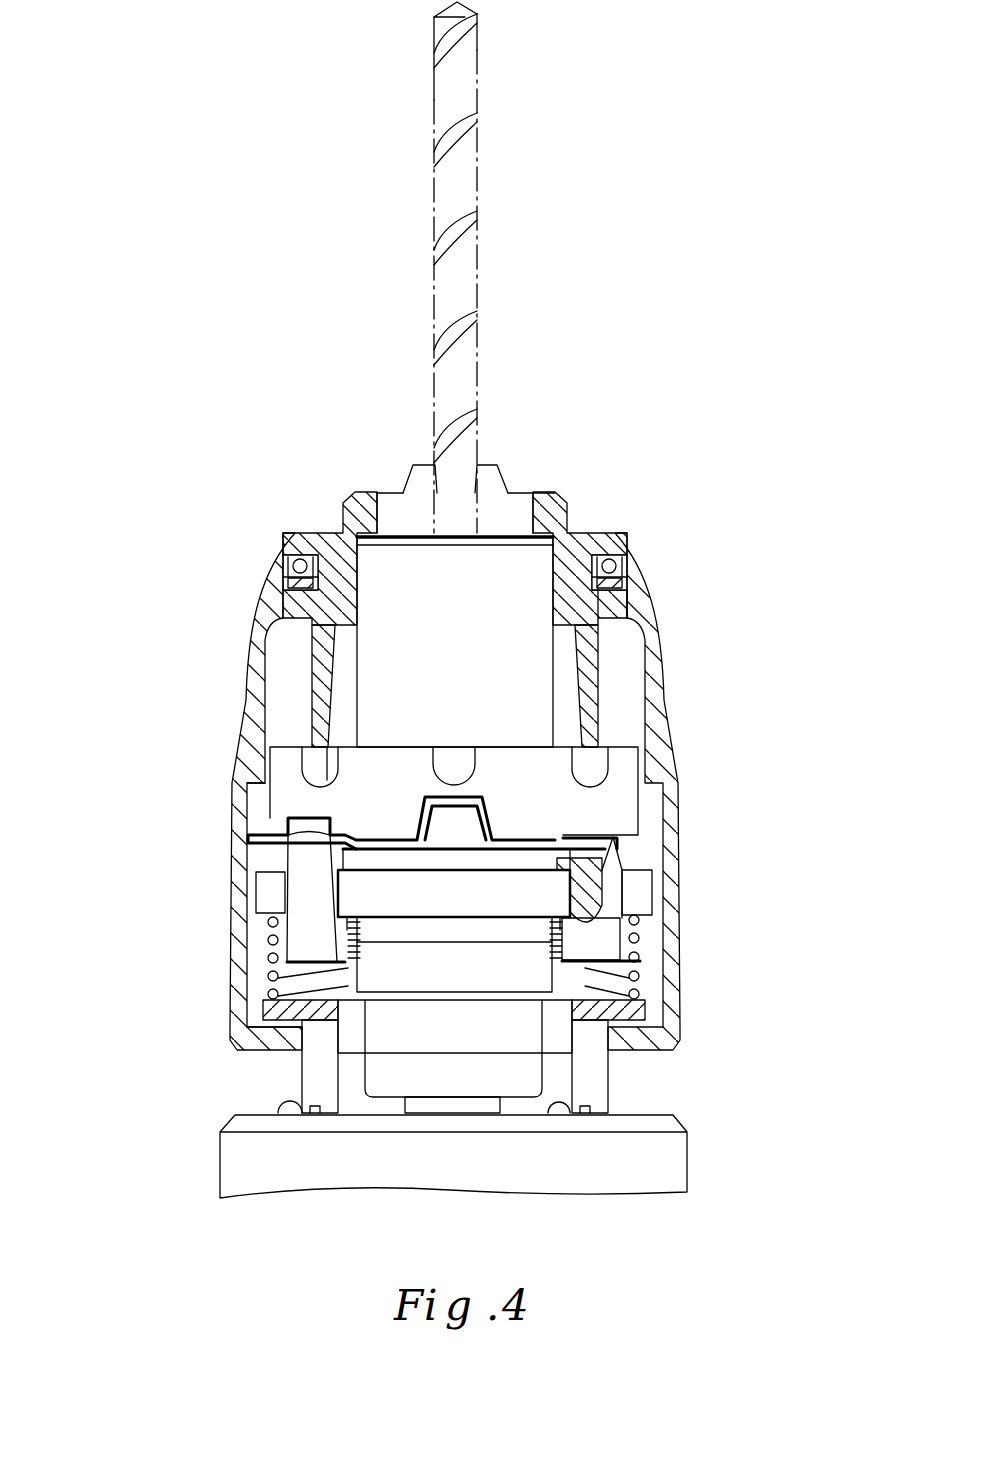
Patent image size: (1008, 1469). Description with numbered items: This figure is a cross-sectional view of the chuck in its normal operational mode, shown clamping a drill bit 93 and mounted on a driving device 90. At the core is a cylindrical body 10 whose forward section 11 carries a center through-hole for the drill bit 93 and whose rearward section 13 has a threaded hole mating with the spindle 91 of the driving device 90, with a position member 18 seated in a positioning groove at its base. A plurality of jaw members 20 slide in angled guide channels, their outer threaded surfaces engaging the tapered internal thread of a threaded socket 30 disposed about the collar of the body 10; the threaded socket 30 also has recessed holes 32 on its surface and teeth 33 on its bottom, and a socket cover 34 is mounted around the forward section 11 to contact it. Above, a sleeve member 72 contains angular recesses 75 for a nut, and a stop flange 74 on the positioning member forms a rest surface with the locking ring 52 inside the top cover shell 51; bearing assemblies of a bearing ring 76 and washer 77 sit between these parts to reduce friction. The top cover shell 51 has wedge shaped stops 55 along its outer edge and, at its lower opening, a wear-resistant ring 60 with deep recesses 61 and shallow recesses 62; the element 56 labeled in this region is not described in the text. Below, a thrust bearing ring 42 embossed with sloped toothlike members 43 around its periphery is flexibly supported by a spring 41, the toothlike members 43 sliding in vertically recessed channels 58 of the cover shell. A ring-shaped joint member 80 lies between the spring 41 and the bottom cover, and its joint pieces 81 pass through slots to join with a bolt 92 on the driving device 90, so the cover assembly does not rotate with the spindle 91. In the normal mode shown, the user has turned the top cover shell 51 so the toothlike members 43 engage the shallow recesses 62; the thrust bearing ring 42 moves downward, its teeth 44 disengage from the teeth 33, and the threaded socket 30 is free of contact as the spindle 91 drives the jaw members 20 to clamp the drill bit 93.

The drill bit 93 is at (470, 200).
The jaw members 20 is at (407, 452).
The cylindrical body 10 is at (385, 520).
The angular recesses 75 is at (517, 497).
The sleeve member 72 is at (567, 497).
The stop flange 74 is at (306, 547).
The bearing ring 76 is at (628, 560).
The washer 77 is at (603, 608).
The top cover shell 51 is at (263, 577).
The locking ring 52 is at (665, 682).
The forward section 11 is at (368, 638).
The socket cover 34 is at (320, 680).
The threaded socket 30 is at (289, 733).
The recessed holes 32 is at (593, 762).
The deep recesses 61 is at (488, 790).
The wedge shaped stops 55 is at (535, 840).
The teeth 33 is at (652, 828).
The rib 56 is at (250, 762).
The shallow recesses 62 is at (300, 812).
The wear-resistant ring 60 is at (264, 833).
The teeth 44 is at (655, 878).
The thrust bearing ring 42 is at (267, 897).
The toothlike members 43 is at (308, 913).
The spring 41 is at (305, 958).
The joint member 80 is at (661, 1005).
The vertically recessed channels 58 is at (250, 1012).
The position member 18 is at (373, 1075).
The joint pieces 81 is at (593, 1057).
The rearward section 13 is at (522, 1075).
The driving device 90 is at (706, 1156).
The spindle 91 is at (438, 1105).
The bolt 92 is at (292, 1110).